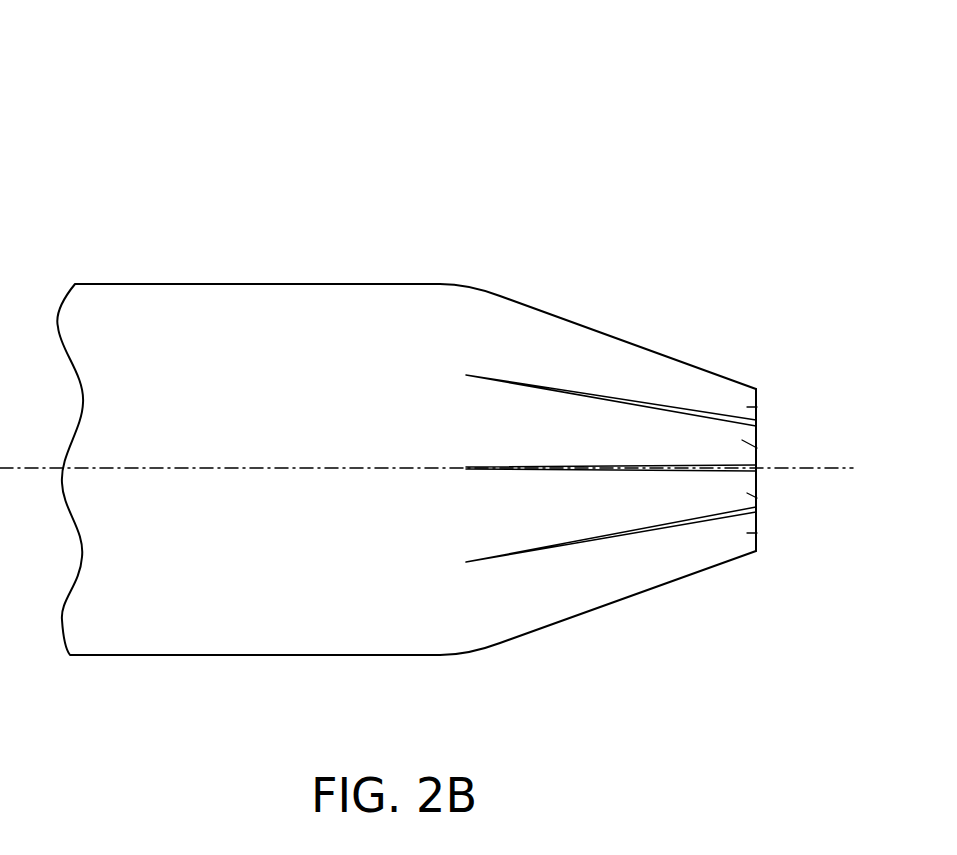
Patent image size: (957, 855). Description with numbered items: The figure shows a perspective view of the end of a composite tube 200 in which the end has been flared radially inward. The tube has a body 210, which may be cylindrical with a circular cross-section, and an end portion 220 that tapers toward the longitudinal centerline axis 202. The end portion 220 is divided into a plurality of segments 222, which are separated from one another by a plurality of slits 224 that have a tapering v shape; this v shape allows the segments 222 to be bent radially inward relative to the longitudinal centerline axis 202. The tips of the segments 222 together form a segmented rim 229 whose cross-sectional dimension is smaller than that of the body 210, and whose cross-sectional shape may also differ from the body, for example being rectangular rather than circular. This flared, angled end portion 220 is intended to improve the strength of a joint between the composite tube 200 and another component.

The composite tube 200 is at (140, 138).
The body 210 is at (243, 322).
The end portion 220 is at (760, 228).
The plurality of segments 222 is at (757, 407).
The plurality of slits 224 is at (692, 418).
The rim 229 is at (767, 395).
The longitudinal centerline axis 202 is at (820, 468).